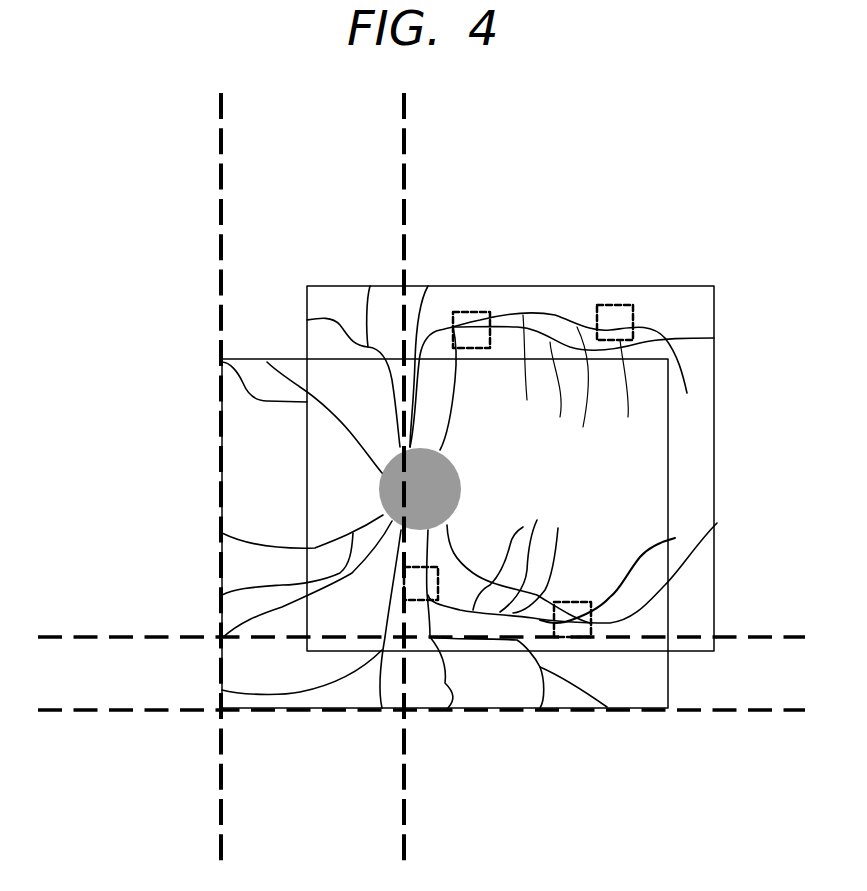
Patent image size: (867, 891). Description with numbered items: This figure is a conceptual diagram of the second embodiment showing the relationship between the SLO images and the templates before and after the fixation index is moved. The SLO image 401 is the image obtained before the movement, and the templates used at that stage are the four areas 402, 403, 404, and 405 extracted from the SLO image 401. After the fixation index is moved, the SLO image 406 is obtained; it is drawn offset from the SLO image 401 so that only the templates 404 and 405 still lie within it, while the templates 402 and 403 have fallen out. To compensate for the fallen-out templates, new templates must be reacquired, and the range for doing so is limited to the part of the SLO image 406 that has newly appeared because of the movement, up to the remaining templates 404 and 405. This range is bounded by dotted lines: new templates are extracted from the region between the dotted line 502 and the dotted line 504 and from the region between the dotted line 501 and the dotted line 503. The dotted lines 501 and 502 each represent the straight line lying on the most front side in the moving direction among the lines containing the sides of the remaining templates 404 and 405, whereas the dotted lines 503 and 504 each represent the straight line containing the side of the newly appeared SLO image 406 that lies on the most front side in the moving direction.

The SLO image 401 is at (707, 310).
The template 402 is at (470, 312).
The template 403 is at (612, 305).
The template 404 is at (428, 595).
The template 405 is at (575, 602).
The SLO image 406 is at (221, 668).
The dotted line 501 is at (403, 781).
The dotted line 502 is at (156, 637).
The dotted line 503 is at (220, 781).
The dotted line 504 is at (88, 710).